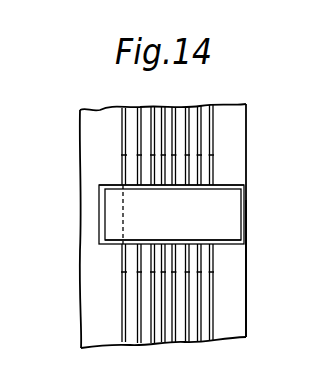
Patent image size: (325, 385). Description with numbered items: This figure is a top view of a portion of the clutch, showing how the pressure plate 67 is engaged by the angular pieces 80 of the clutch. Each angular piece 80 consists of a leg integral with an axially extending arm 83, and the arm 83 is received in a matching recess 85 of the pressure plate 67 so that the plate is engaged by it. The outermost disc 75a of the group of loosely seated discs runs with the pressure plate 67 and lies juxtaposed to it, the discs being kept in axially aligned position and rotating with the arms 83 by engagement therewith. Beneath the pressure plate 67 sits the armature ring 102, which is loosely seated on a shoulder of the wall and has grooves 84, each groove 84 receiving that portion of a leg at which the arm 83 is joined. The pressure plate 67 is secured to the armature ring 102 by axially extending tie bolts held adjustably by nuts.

The armature ring 102 is at (92, 168).
The pressure plate 67 is at (242, 300).
The outermost disc 75a is at (205, 108).
The angular piece 80 is at (245, 210).
The recess 85 is at (230, 185).
The arm 83 is at (233, 230).
The groove 84 is at (113, 246).